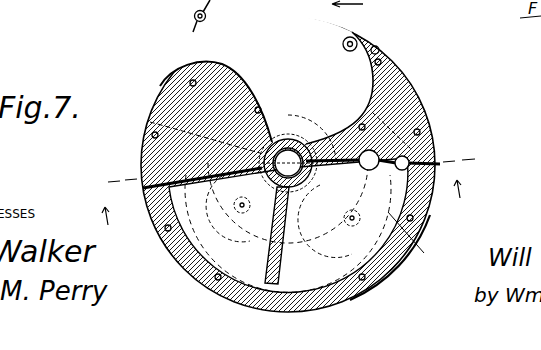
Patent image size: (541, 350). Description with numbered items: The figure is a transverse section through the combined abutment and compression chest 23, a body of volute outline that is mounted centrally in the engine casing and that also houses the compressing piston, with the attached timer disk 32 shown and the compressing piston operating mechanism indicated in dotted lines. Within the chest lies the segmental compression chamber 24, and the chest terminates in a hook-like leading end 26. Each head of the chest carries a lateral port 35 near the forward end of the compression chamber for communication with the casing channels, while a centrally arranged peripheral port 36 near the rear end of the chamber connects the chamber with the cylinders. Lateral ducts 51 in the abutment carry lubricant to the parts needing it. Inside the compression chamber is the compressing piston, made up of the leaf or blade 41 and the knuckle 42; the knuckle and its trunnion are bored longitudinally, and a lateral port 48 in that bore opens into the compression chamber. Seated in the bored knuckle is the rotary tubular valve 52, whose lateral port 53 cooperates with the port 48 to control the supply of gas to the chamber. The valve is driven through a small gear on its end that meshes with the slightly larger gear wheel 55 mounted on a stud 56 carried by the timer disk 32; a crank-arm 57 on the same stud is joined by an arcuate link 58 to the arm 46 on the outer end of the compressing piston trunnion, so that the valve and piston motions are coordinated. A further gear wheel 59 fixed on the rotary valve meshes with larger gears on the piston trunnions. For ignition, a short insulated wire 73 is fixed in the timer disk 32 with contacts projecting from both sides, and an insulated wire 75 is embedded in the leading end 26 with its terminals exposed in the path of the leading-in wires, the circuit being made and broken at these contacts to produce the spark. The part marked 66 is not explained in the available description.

The combined abutment and compression chest 23 is at (165, 94).
The segmental compression chamber 24 is at (178, 250).
The hook-like leading end 26 is at (381, 61).
The timer disk 32 is at (266, 80).
The lateral port 35 is at (440, 165).
The peripheral port 36 is at (137, 188).
The leaf or blade 41 is at (318, 239).
The knuckle 42 is at (303, 143).
The arm 46 is at (254, 236).
The lateral port 48 is at (288, 137).
The lateral ducts 51 is at (176, 132).
The rotary tubular valve 52 is at (236, 205).
The lateral port 53 is at (329, 221).
The gear wheel 55 is at (375, 198).
The stud 56 is at (433, 143).
The crank-arm 57 is at (417, 236).
The arcuate link 58 is at (358, 290).
The gear wheel 59 is at (296, 128).
The valve stem 66 is at (216, 13).
The insulated wire 73 is at (354, 38).
The insulated wire 75 is at (378, 49).